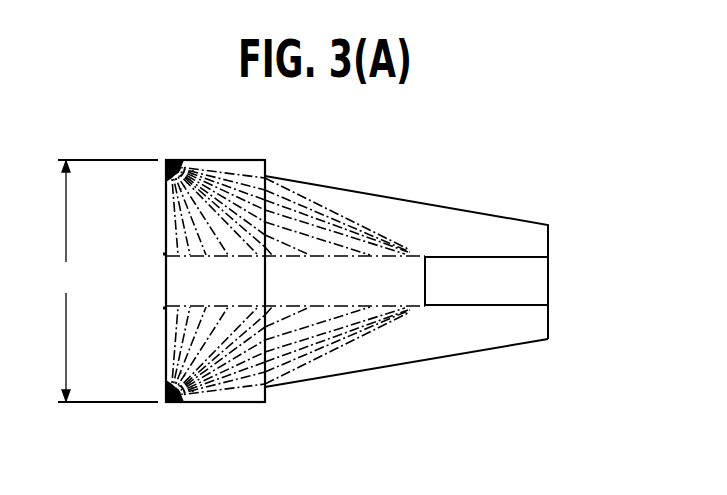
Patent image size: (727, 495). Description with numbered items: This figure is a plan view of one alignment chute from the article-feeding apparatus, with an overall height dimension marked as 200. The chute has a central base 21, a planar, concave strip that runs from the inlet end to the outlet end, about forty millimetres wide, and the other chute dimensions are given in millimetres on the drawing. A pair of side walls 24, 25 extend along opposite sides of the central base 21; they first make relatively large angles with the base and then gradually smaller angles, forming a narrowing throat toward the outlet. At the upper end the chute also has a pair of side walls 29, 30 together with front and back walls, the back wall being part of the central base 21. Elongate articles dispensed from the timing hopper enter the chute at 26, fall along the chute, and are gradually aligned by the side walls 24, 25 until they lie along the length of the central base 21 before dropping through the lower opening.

The dimension (height of light guide) 200 is at (101, 281).
The chute entry point 26 is at (270, 155).
The side wall 24 is at (377, 205).
The side wall 25 is at (415, 366).
The central base 21 is at (405, 265).
The side wall 29 is at (213, 156).
The side wall 30 is at (177, 407).